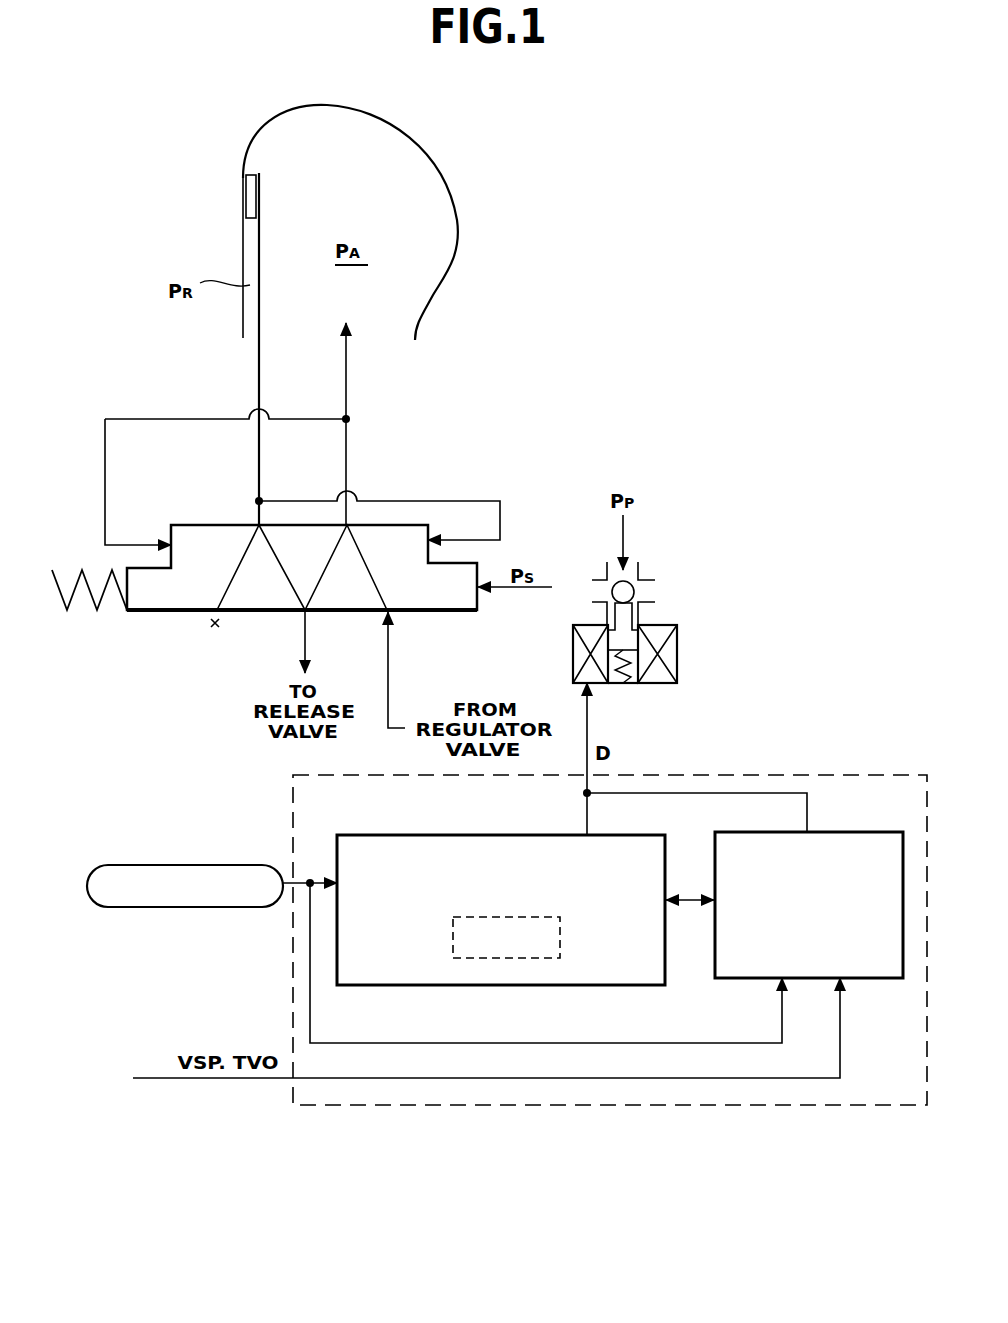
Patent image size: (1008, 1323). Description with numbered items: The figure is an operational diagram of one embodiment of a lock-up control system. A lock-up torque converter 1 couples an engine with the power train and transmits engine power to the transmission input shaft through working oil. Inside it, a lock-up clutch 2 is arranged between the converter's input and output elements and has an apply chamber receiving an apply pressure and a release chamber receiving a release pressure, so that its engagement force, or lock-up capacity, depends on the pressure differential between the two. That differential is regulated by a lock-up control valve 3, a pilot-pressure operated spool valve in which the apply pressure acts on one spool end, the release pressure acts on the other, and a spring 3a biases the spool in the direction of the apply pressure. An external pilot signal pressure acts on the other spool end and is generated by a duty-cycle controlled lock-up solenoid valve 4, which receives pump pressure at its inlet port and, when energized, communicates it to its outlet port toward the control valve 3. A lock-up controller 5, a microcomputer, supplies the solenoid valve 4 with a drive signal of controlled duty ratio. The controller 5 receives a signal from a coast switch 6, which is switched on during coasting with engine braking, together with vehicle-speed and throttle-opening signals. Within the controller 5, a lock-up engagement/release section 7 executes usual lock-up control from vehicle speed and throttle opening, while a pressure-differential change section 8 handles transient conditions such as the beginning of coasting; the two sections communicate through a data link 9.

The lock-up torque converter 1 is at (440, 168).
The lock-up clutch 2 is at (260, 245).
The lock-up control valve 3 is at (143, 613).
The spring 3a is at (55, 597).
The lock-up solenoid valve 4 is at (665, 685).
The lock-up controller 5 is at (467, 1107).
The coast switch 6 is at (192, 862).
The lock-up engagement/release section 7 is at (848, 830).
The pressure-differential change section 8 is at (540, 832).
The data link 9 is at (690, 896).